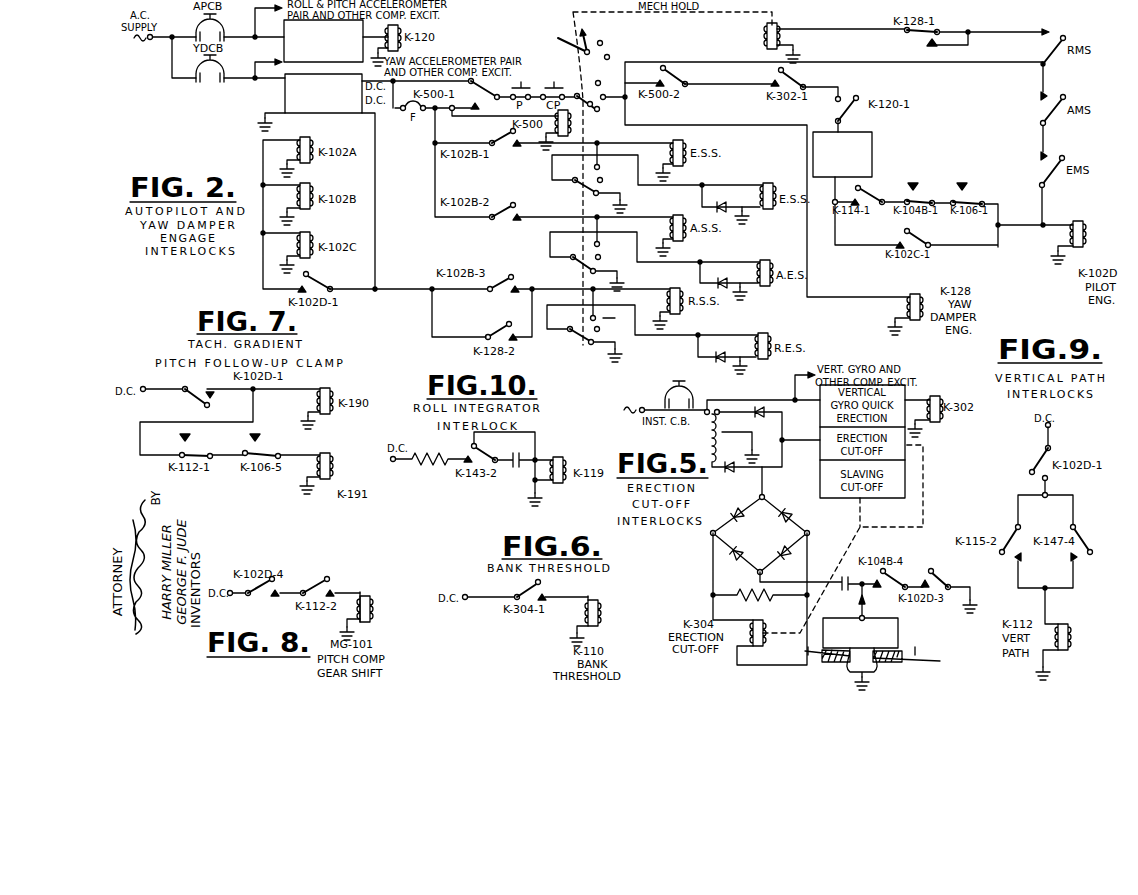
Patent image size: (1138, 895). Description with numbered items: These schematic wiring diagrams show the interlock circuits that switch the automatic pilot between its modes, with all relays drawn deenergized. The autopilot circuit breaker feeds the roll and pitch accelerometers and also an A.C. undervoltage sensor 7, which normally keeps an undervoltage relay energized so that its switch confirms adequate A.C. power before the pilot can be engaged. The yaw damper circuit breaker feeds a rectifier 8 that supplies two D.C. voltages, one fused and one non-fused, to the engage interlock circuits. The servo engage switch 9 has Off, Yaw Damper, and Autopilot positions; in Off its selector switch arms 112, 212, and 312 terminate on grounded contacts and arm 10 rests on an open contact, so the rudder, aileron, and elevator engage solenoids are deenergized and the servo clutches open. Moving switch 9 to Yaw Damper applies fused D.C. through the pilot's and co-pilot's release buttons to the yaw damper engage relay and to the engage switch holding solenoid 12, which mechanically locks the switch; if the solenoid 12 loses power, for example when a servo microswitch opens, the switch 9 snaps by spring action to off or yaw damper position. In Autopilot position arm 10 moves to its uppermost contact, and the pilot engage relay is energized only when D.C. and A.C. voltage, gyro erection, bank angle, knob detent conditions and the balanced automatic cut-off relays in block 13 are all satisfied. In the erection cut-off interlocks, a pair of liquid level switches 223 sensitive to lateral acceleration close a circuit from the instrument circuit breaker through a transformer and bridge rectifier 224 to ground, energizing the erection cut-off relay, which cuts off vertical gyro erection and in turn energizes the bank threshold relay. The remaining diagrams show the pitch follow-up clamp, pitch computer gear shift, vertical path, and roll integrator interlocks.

In FIG. 2, the A.C. undervoltage sensor 7 is at (284, 51).
In FIG. 2, the rectifier 8 is at (285, 93).
In FIG. 2, the servo engage switch 9 is at (558, 38).
In FIG. 2, the switch arm 10 is at (596, 112).
In FIG. 2, the engage switch holding solenoid 12 is at (780, 36).
In FIG. 2, the automatic cut-off relays 13 is at (872, 150).
In FIG. 2, the selector switch arm 112 is at (578, 345).
In FIG. 2, the selector switch arm 212 is at (575, 262).
In FIG. 2, the selector switch arm 312 is at (577, 184).
In FIG. 5, the liquid level switches 223 is at (874, 640).
In FIG. 5, the bridge rectifier 224 is at (773, 544).